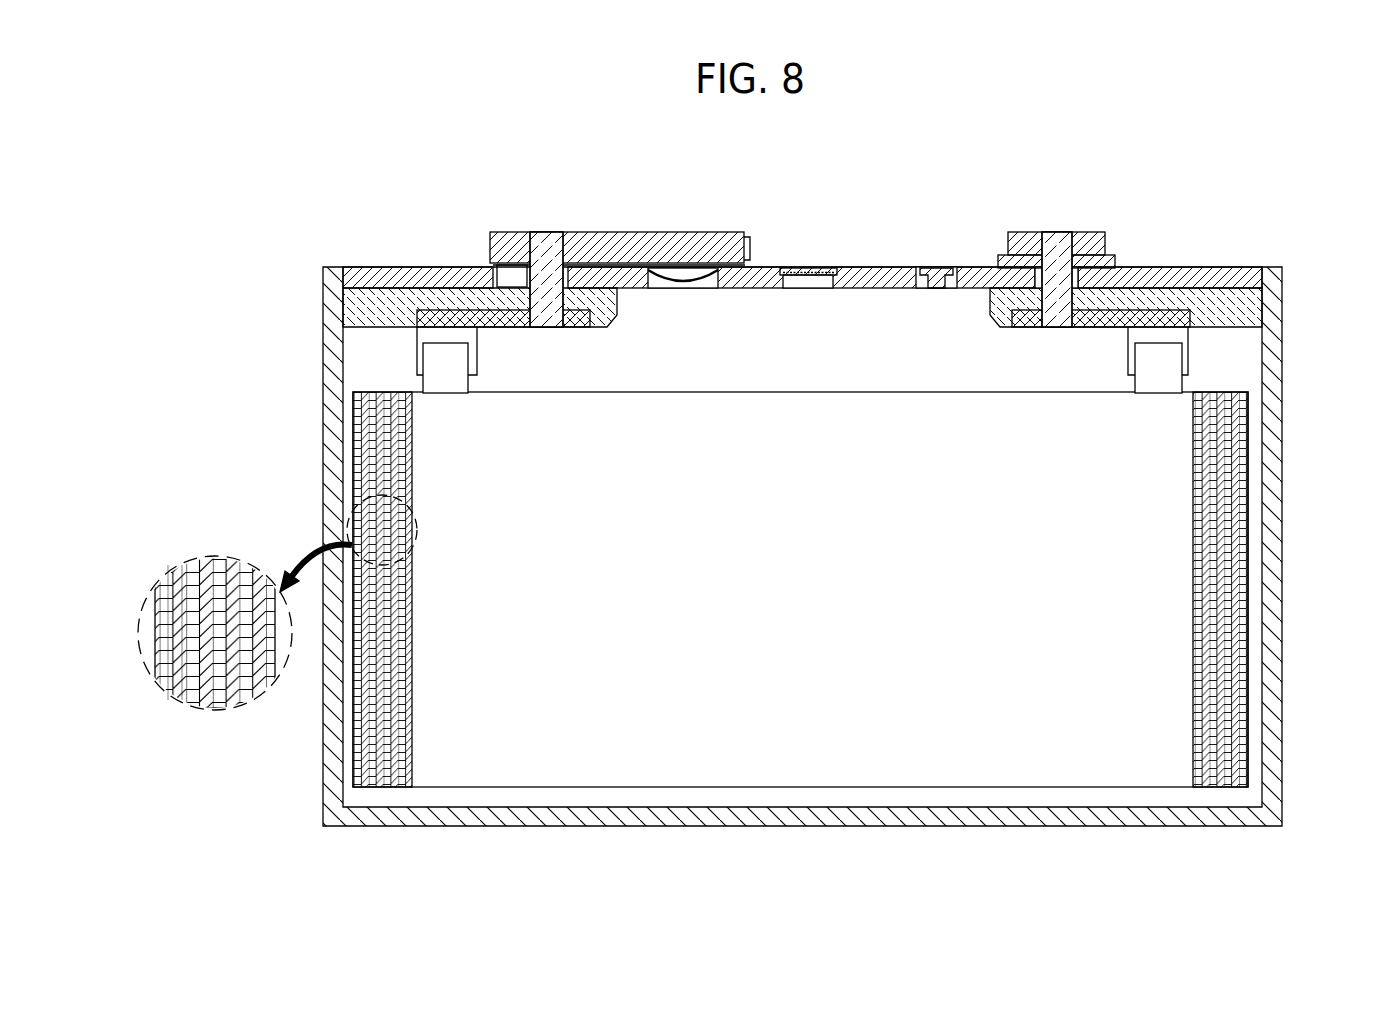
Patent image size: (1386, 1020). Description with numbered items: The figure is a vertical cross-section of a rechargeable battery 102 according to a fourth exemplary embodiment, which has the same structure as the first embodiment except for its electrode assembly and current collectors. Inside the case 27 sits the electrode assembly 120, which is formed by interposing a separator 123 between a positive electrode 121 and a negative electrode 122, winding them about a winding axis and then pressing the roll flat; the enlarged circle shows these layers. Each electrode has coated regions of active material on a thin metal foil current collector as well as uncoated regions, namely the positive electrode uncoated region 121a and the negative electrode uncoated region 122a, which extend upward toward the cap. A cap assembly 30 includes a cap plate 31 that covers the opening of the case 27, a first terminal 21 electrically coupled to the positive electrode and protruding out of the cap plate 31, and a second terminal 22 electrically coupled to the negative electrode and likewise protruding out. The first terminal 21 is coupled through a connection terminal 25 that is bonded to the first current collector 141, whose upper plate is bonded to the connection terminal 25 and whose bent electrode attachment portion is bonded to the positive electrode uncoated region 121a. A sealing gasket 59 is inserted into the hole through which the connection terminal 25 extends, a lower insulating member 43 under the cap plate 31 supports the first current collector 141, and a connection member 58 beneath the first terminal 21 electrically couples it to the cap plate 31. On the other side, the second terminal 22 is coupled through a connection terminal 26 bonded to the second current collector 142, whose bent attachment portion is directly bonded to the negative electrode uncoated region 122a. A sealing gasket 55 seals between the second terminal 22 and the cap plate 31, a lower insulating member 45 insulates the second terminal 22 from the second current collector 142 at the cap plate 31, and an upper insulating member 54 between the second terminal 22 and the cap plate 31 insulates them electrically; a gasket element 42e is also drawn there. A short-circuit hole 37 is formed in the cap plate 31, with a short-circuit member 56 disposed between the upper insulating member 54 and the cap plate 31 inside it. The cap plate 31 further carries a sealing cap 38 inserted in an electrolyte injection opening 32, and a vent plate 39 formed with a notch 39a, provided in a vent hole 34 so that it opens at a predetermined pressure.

The rechargeable battery 102 is at (880, 138).
The case 27 is at (1283, 529).
The electrode assembly 120 is at (857, 782).
The positive electrode 121 is at (177, 693).
The negative electrode 122 is at (202, 695).
The separator 123 is at (188, 573).
The positive electrode uncoated region 121a is at (1167, 362).
The negative electrode uncoated region 122a is at (432, 360).
The cap assembly 30 is at (772, 262).
The cap plate 31 is at (1245, 273).
The second current collector 142 is at (433, 273).
The first current collector 141 is at (1168, 317).
The lower insulating member 45 is at (350, 305).
The lower insulating member 43 is at (1243, 307).
The second terminal 22 is at (512, 243).
The connection terminal 26 is at (547, 247).
The first terminal 21 is at (1088, 240).
The connection terminal 25 is at (1057, 243).
The sealing gasket 55 is at (500, 312).
The upper insulating member 54 is at (748, 245).
The insulating gasket 42e is at (477, 307).
The connection member 58 is at (1113, 260).
The sealing gasket 59 is at (1035, 284).
The short-circuit hole 37 is at (648, 268).
The short-circuit member 56 is at (687, 277).
The vent hole 34 is at (807, 288).
The vent plate 39 is at (832, 268).
The notch 39a is at (807, 270).
The electrolyte injection opening 32 is at (928, 290).
The sealing cap 38 is at (937, 267).